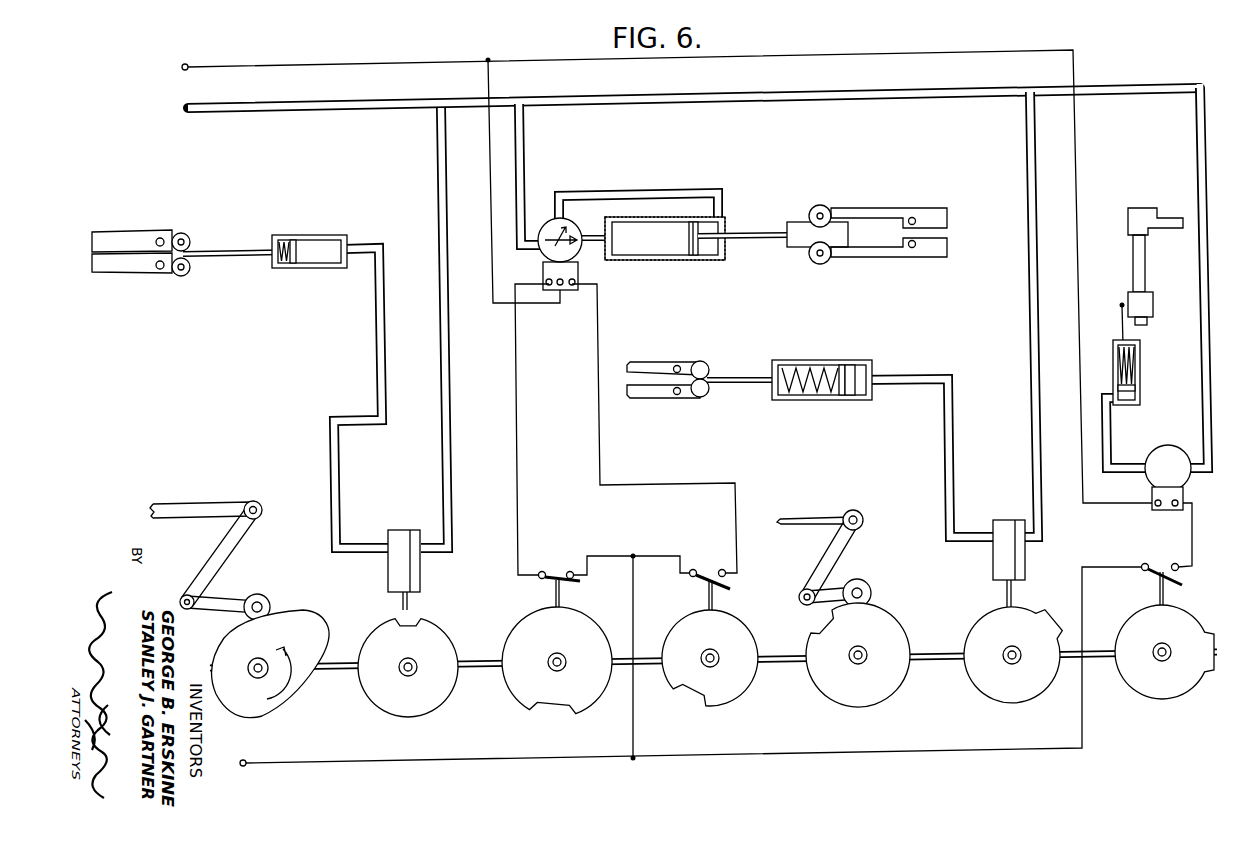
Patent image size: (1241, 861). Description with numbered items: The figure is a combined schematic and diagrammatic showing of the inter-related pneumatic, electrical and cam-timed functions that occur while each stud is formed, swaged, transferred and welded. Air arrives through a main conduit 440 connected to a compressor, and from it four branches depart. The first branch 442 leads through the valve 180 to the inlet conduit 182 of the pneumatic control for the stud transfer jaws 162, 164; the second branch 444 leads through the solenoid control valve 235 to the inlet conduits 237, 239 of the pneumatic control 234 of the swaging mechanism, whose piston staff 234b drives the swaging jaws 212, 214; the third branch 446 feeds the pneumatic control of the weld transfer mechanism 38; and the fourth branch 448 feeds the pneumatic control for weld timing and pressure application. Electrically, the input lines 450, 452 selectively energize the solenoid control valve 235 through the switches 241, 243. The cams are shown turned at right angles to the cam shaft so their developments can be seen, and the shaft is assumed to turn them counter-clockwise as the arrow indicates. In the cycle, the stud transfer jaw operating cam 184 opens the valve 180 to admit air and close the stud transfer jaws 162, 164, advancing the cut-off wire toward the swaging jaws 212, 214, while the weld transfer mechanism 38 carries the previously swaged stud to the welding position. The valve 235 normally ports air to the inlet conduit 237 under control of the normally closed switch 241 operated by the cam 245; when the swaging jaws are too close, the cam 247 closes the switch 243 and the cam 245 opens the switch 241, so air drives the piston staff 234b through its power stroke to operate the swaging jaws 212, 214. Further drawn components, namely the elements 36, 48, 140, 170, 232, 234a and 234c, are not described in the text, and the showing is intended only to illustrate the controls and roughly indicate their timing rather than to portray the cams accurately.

The clamping and cutting mechanism 36 is at (882, 232).
The weld transfer mechanism 38 is at (139, 296).
The gripper 48 is at (701, 383).
The cam shaft 140 is at (792, 666).
The stud transfer jaw 162 is at (642, 364).
The stud transfer jaw 164 is at (662, 400).
The spring-loaded cylinder 170 is at (828, 360).
The valve 180 is at (1003, 518).
The inlet conduit 182 is at (955, 402).
The stud transfer jaw operating cam 184 is at (1037, 684).
The swaging jaw 212 is at (940, 216).
The swaging jaw 214 is at (940, 253).
The carriage block 232 is at (797, 230).
The pneumatic control for the swaging mechanism 234 is at (665, 261).
The cylinder housing 234a is at (646, 262).
The piston staff 234b is at (752, 232).
The piston 234c is at (695, 257).
The solenoid control valve 235 is at (546, 222).
The inlet conduit 237 is at (597, 246).
The inlet conduit 239 is at (634, 196).
The normally closed switch 241 is at (555, 557).
The switch 243 is at (698, 568).
The cam 245 is at (556, 702).
The cam 247 is at (738, 690).
The main conduit 440 is at (371, 104).
The first branch 442 is at (1029, 283).
The second branch 444 is at (524, 157).
The third branch 446 is at (447, 373).
The fourth branch 448 is at (1196, 148).
The input line 450 is at (376, 67).
The input line 452 is at (462, 766).